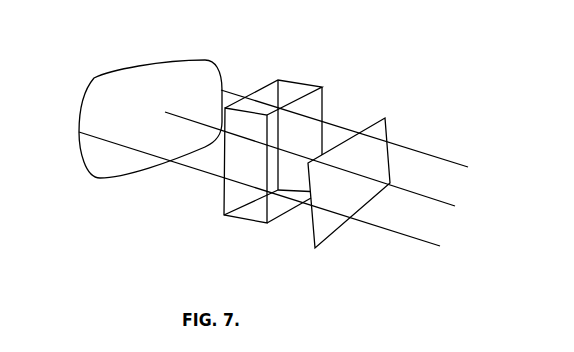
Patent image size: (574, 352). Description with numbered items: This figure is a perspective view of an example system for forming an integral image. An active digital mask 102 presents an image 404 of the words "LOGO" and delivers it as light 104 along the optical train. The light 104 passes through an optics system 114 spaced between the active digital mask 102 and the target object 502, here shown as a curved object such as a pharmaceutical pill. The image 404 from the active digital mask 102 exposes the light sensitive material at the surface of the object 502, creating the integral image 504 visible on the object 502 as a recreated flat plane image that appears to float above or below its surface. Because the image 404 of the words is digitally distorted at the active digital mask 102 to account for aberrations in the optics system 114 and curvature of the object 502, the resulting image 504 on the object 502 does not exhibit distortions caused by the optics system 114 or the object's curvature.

The target object 502 is at (80, 85).
The integral image 504 is at (163, 73).
The light 104 is at (197, 172).
The optics system 114 is at (247, 222).
The active digital mask 102 is at (390, 142).
The image 404 is at (350, 143).